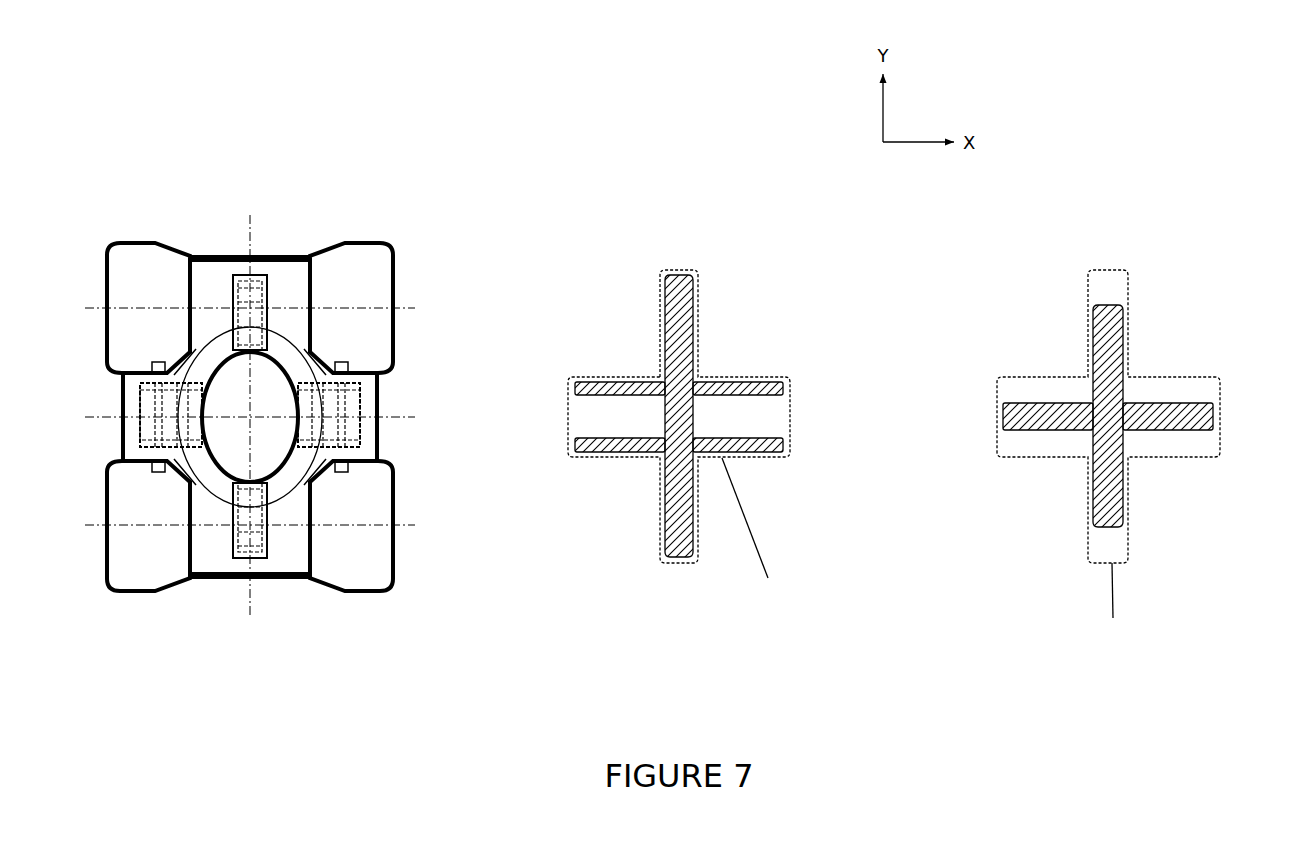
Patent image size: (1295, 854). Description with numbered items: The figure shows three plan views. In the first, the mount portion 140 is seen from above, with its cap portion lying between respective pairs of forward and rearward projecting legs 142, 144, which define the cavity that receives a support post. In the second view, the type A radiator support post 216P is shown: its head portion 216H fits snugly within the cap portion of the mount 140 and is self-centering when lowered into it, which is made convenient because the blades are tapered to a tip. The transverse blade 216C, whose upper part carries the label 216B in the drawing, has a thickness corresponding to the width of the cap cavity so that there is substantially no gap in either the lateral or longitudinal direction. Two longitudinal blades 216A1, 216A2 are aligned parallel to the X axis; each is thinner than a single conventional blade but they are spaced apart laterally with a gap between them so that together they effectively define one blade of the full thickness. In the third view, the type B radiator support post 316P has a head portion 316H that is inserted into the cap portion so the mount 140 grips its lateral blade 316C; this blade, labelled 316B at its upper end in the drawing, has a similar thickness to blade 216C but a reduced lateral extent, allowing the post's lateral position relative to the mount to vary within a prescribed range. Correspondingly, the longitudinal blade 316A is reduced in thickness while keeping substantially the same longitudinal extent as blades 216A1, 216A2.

The mount portion 140 is at (331, 174).
The forward projecting leg 142 is at (370, 266).
The rearward projecting leg 144 is at (130, 266).
The type 'A' radiator support post 216P is at (719, 206).
The vertical flexure blade 216B is at (661, 275).
The transverse blade 216C is at (661, 528).
The head portion 216H is at (764, 326).
The longitudinal blade 216A1 is at (590, 455).
The longitudinal blade 216A2 is at (590, 379).
The type 'B' radiator support post 316P is at (1188, 300).
The vertical flexure blade 316B is at (1090, 306).
The longitudinal blade 316A is at (1030, 430).
The lateral blade 316C is at (1090, 520).
The head portion 316H is at (1142, 493).